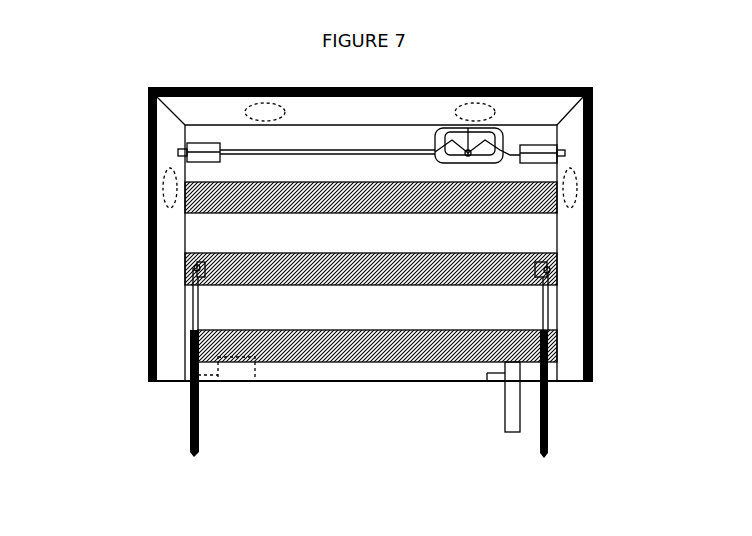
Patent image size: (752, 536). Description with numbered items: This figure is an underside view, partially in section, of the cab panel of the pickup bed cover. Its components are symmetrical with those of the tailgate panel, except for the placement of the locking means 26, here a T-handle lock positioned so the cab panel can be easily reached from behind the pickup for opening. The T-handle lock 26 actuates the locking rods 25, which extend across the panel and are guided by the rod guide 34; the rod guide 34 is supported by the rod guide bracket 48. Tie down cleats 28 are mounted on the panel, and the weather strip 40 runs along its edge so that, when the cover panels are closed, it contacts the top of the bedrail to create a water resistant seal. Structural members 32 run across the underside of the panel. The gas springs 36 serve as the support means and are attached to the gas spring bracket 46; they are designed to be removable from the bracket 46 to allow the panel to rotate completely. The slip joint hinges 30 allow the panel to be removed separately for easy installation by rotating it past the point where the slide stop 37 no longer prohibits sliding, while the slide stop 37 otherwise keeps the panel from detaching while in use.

The locking rods 25 is at (187, 152).
The locking means 26 is at (465, 128).
The tie down cleats 28 is at (265, 87).
The slip joint hinges 30 is at (487, 378).
The structural members 32 is at (532, 233).
The rod guide 34 is at (555, 150).
The gas springs 36 is at (187, 366).
The slide stop 37 is at (505, 432).
The weather strip 40 is at (148, 239).
The gas spring bracket 46 is at (547, 262).
The rod guide bracket 48 is at (203, 142).